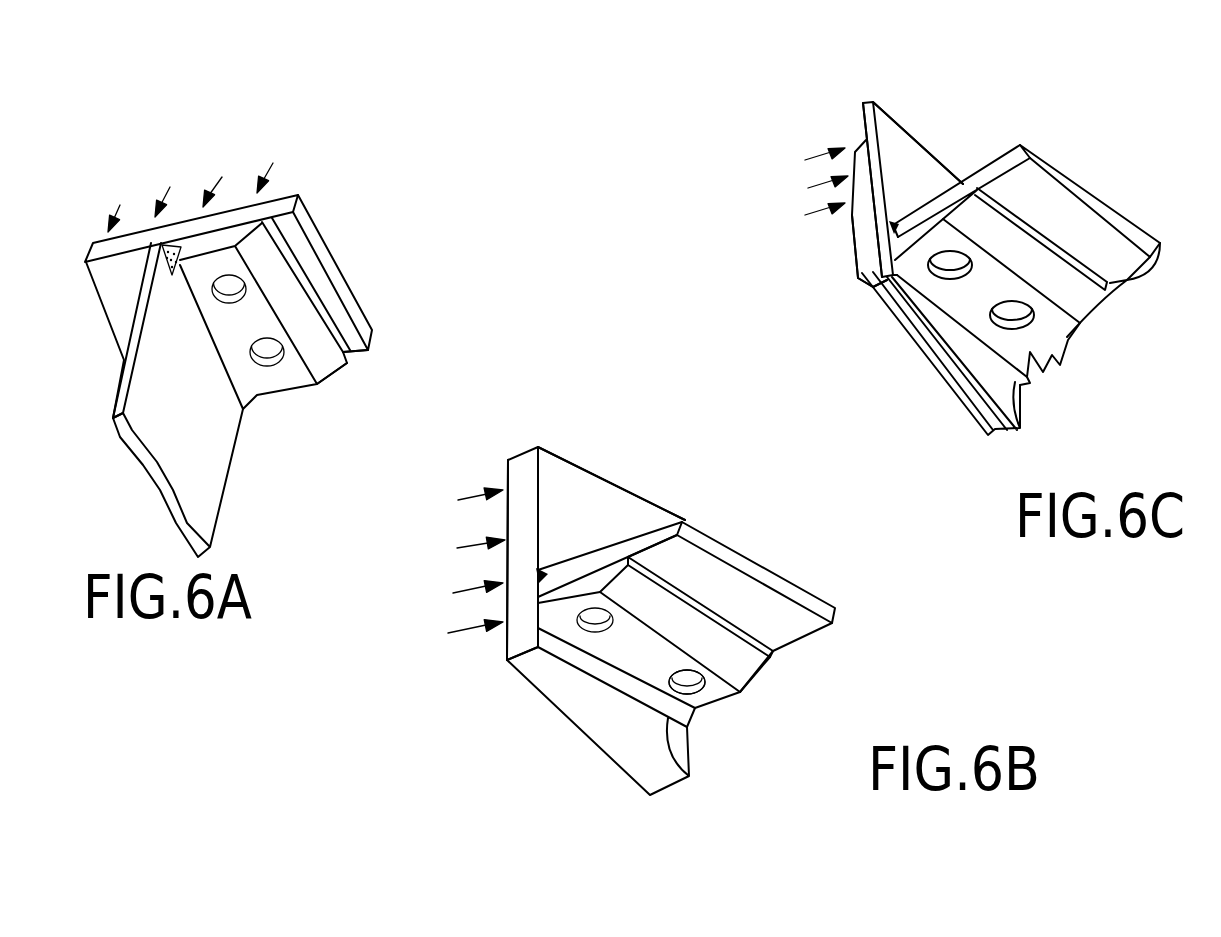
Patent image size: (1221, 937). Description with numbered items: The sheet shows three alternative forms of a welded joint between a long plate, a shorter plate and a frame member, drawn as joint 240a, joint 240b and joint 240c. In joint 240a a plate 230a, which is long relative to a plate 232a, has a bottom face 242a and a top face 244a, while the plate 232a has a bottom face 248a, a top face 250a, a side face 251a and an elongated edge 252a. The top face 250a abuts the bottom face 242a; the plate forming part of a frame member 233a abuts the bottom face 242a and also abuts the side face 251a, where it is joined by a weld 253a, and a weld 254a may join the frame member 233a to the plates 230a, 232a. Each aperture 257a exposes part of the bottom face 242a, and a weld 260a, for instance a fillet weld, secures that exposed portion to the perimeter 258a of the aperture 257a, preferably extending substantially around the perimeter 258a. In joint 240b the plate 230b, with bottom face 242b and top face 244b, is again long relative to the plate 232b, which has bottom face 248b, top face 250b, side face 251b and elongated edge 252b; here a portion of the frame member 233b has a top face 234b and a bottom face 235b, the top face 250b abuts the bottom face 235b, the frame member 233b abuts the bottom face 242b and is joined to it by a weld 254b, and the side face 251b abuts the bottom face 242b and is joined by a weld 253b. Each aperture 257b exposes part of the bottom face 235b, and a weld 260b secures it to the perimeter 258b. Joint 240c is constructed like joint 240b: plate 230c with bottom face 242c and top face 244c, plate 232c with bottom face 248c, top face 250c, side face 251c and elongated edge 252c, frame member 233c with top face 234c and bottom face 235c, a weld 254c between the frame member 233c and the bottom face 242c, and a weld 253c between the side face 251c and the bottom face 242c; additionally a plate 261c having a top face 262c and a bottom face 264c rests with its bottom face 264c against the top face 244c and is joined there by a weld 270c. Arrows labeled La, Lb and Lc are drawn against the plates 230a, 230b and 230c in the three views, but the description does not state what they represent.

In FIG. 6A, the joint 240a is at (292, 112).
In FIG. 6A, the plate 230a is at (291, 196).
In FIG. 6A, the top face 244a is at (300, 209).
In FIG. 6A, the bottom face 242a is at (300, 258).
In FIG. 6A, the plate 232a is at (301, 392).
In FIG. 6A, the elongated edge 252a is at (346, 355).
In FIG. 6A, the bottom face 248a is at (273, 380).
In FIG. 6A, the top face 250a is at (200, 232).
In FIG. 6A, the weld 254a is at (165, 262).
In FIG. 6A, the side face 251a is at (165, 250).
In FIG. 6A, the weld 253a is at (128, 380).
In FIG. 6A, the frame member 233a is at (200, 500).
In FIG. 6A, the weld 260a is at (222, 295).
In FIG. 6A, the aperture 257a is at (265, 341).
In FIG. 6A, the perimeter 258a is at (253, 362).
In FIG. 6A, the light rays La is at (217, 182).
In FIG. 6B, the joint 240b is at (540, 758).
In FIG. 6B, the plate 230b is at (512, 460).
In FIG. 6B, the top face 244b is at (507, 510).
In FIG. 6B, the bottom face 242b is at (553, 472).
In FIG. 6B, the side face 251b is at (508, 650).
In FIG. 6B, the top face 234b is at (753, 557).
In FIG. 6B, the frame member 233b is at (685, 557).
In FIG. 6B, the bottom face 235b is at (777, 610).
In FIG. 6B, the top face 250b is at (562, 602).
In FIG. 6B, the weld 254b is at (541, 573).
In FIG. 6B, the plate 232b is at (742, 690).
In FIG. 6B, the elongated edge 252b is at (775, 652).
In FIG. 6B, the bottom face 248b is at (705, 697).
In FIG. 6B, the weld 253b is at (690, 767).
In FIG. 6B, the aperture 257b is at (535, 652).
In FIG. 6B, the perimeter 258b is at (597, 612).
In FIG. 6B, the weld 260b is at (673, 692).
In FIG. 6B, the light rays Lb is at (478, 495).
In FIG. 6C, the joint 240c is at (806, 69).
In FIG. 6C, the plate 230c is at (865, 100).
In FIG. 6C, the top face 244c is at (860, 117).
In FIG. 6C, the bottom face 242c is at (892, 137).
In FIG. 6C, the bottom face 264c is at (858, 232).
In FIG. 6C, the top face 262c is at (866, 268).
In FIG. 6C, the plate 261c is at (860, 278).
In FIG. 6C, the weld 270c is at (876, 285).
In FIG. 6C, the weld 254c is at (893, 222).
In FIG. 6C, the side face 251c is at (898, 237).
In FIG. 6C, the top face 250c is at (950, 185).
In FIG. 6C, the top face 234c is at (1098, 193).
In FIG. 6C, the frame member 233c is at (1037, 187).
In FIG. 6C, the bottom face 235c is at (1120, 247).
In FIG. 6C, the elongated edge 252c is at (1127, 281).
In FIG. 6C, the plate 232c is at (1068, 337).
In FIG. 6C, the bottom face 248c is at (1030, 352).
In FIG. 6C, the weld 253c is at (1023, 372).
In FIG. 6C, the light rays Lc is at (822, 192).